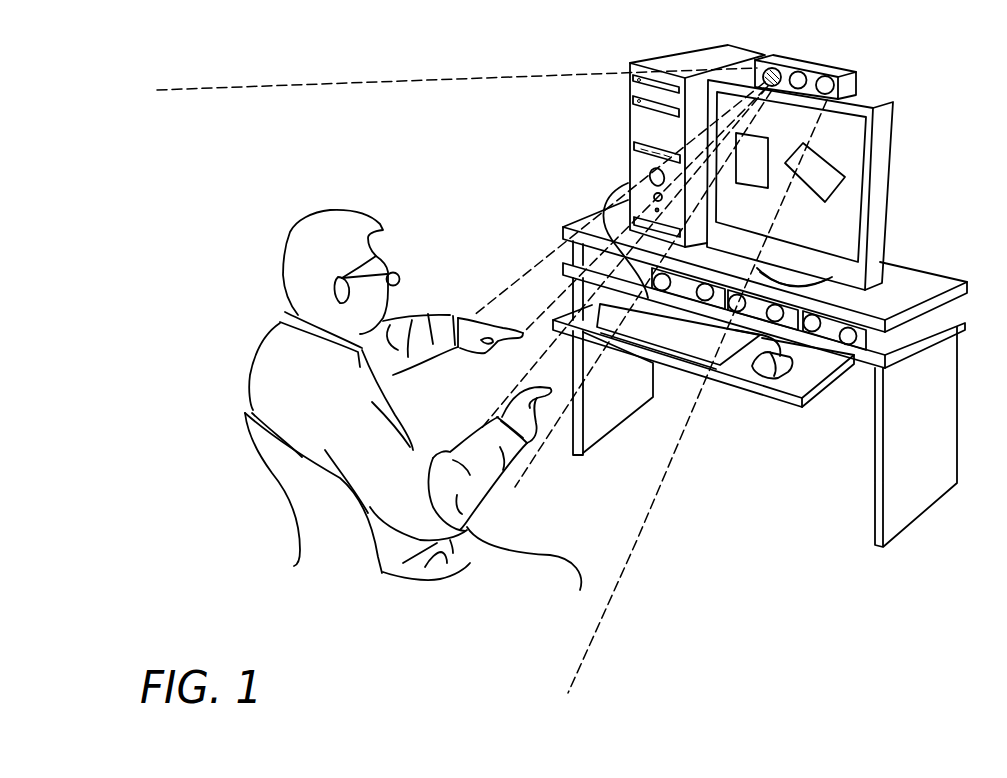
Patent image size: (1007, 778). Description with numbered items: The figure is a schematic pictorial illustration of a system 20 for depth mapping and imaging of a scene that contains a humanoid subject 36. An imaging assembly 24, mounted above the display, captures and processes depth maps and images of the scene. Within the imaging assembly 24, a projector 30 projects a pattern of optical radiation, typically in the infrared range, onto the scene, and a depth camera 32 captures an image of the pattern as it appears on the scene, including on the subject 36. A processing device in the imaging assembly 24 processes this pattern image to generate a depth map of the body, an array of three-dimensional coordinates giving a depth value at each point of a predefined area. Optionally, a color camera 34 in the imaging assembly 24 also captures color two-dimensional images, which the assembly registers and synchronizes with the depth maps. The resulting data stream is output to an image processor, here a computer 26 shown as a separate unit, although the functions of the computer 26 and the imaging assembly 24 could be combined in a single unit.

The system 20 is at (918, 90).
The imaging assembly 24 is at (858, 82).
The computer 26 is at (630, 120).
The projector 30 is at (801, 71).
The depth camera 32 is at (778, 68).
The color camera 34 is at (828, 76).
The humanoid subject 36 is at (282, 232).